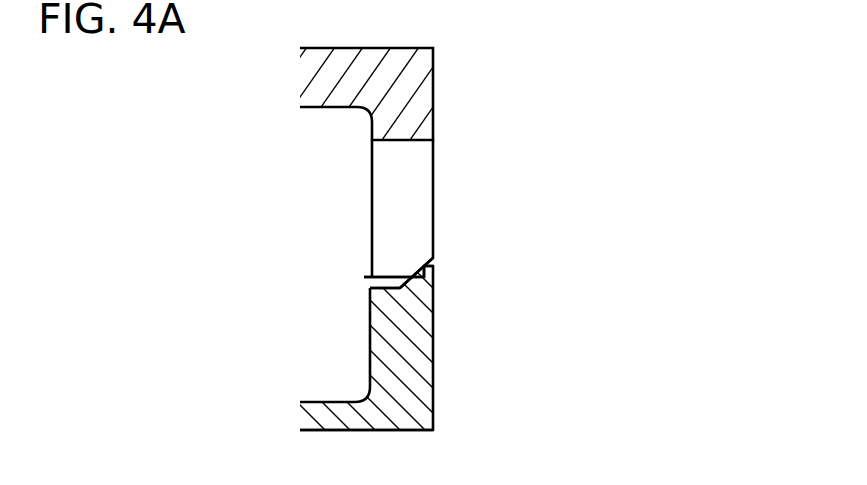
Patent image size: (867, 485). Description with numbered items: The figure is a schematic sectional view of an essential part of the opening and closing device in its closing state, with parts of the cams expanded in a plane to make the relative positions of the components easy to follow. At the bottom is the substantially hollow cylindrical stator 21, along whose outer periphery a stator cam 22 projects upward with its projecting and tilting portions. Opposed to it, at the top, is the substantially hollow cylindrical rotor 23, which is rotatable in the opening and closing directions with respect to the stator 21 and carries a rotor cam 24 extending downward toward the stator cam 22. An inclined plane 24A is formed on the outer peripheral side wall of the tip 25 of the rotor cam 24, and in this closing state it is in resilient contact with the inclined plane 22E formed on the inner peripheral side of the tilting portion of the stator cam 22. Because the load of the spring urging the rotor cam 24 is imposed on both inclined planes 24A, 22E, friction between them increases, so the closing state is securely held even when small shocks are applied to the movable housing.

The stator 21 is at (392, 431).
The stator cam 22 is at (427, 368).
The inclined plane 22E is at (420, 265).
The rotor 23 is at (340, 72).
The rotor cam 24 is at (422, 165).
The inclined plane 24A is at (426, 272).
The tip 25 is at (395, 281).